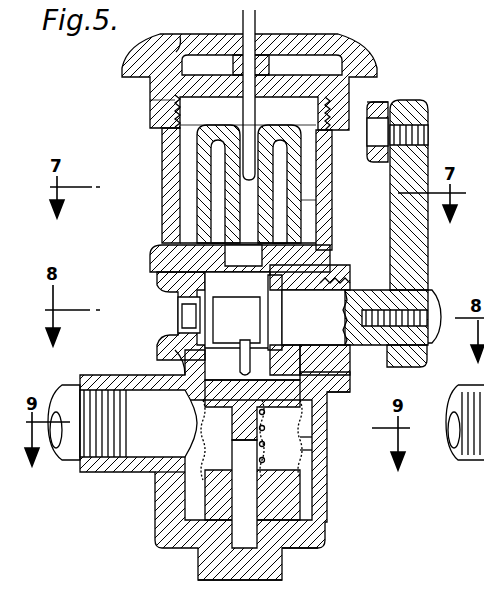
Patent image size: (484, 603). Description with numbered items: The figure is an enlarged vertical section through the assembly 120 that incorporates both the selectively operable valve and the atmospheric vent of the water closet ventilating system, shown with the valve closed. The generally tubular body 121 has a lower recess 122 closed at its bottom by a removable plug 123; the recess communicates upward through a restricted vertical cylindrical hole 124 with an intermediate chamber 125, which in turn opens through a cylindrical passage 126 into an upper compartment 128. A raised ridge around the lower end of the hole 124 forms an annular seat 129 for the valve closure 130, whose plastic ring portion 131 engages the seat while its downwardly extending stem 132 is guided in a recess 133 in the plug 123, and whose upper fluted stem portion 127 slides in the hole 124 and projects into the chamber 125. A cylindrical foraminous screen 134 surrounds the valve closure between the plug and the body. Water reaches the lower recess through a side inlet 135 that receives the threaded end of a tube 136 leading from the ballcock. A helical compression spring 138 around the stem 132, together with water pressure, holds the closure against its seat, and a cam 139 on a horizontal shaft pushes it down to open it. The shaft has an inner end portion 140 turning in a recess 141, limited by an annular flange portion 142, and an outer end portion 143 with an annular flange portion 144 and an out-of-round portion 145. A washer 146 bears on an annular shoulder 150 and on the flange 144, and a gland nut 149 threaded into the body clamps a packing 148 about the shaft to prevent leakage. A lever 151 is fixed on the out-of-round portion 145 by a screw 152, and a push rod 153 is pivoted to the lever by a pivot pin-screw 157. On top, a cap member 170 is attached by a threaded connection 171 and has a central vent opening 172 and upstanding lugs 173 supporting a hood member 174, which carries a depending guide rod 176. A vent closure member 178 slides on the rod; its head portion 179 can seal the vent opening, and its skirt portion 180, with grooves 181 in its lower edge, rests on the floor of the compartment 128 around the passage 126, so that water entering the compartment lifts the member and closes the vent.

The assembly 120 is at (160, 207).
The body 121 is at (166, 223).
The lower recess 122 is at (300, 482).
The plug 123 is at (290, 550).
The vertical cylindrical hole 124 is at (180, 366).
The intermediate chamber 125 is at (178, 272).
The cylindrical passage 126 is at (243, 255).
The upper fluted stem portion 127 is at (172, 352).
The upper compartment 128 is at (178, 184).
The annular seat 129 is at (138, 423).
The valve closure 130 is at (222, 405).
The plastic ring portion 131 is at (320, 404).
The downwardly extending stem 132 is at (252, 462).
The recess 133 is at (228, 505).
The foraminous screen 134 is at (302, 457).
The side inlet 135 is at (160, 474).
The tube 136 is at (64, 460).
The helical compression spring 138 is at (296, 441).
The cam 139 is at (236, 320).
The inner end portion 140 is at (182, 304).
The recess 141 is at (182, 316).
The annular flange portion 142 is at (200, 292).
The outer end portion 143 is at (314, 317).
The annular flange portion 144 is at (284, 299).
The out-of-round portion 145 is at (412, 290).
The washer 146 is at (282, 355).
The packing 148 is at (306, 358).
The gland nut 149 is at (364, 262).
The annular shoulder 150 is at (264, 283).
The lever 151 is at (426, 246).
The screw 152 is at (436, 300).
The push rod 153 is at (380, 102).
The pivot pin-screw 157 is at (370, 152).
The cap member 170 is at (150, 86).
The threaded connection 171 is at (170, 110).
The vent opening 172 is at (295, 55).
The lugs 173 is at (178, 34).
The hood member 174 is at (332, 38).
The guide rod 176 is at (244, 34).
The vent closure member 178 is at (318, 203).
The head portion 179 is at (200, 132).
The skirt portion 180 is at (210, 162).
The grooves 181 is at (196, 234).